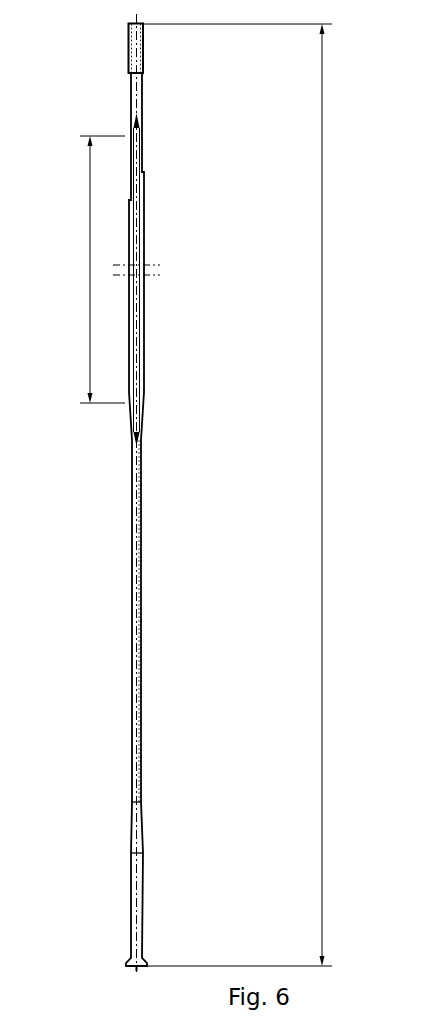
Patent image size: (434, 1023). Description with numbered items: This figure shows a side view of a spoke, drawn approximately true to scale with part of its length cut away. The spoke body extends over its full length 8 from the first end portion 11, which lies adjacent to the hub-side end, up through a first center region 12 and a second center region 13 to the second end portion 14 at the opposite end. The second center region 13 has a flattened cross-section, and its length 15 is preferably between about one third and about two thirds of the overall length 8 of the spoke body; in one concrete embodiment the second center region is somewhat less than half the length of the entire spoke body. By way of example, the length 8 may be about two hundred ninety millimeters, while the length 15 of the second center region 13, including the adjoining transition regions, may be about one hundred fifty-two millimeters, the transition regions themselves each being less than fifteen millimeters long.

The length of the spoke body 8 is at (322, 393).
The first end portion 11 is at (144, 907).
The first center region 12 is at (142, 611).
The second center region 13 is at (143, 228).
The second end portion 14 is at (143, 85).
The length of the second center region 15 is at (90, 228).